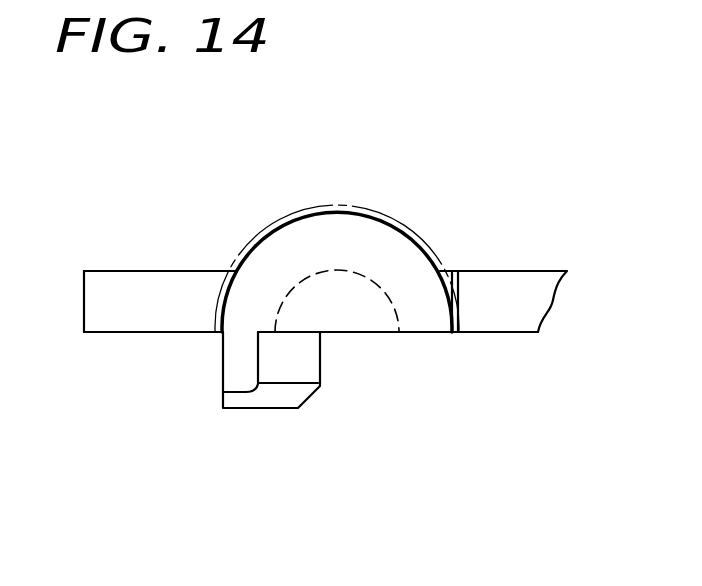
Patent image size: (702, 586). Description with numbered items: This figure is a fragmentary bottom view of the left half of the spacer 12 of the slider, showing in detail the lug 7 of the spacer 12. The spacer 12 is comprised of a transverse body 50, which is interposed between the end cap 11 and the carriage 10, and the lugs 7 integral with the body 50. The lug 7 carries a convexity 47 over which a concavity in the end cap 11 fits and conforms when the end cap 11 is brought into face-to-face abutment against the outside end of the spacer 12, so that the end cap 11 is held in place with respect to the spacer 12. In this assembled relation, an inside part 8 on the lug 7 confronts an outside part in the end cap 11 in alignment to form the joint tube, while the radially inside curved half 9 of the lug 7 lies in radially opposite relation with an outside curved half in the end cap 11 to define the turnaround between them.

The lug 7 is at (417, 331).
The inside part 8 is at (285, 375).
The inside curved half 9 is at (400, 220).
The carriage 10 is at (190, 402).
The end cap 11 is at (192, 237).
The spacer 12 is at (538, 267).
The convexity 47 is at (312, 240).
The transverse body 50 is at (148, 317).